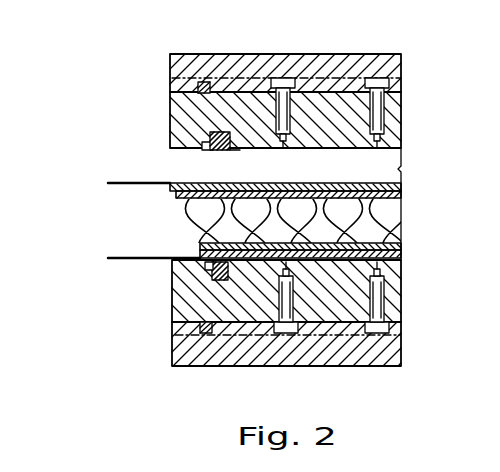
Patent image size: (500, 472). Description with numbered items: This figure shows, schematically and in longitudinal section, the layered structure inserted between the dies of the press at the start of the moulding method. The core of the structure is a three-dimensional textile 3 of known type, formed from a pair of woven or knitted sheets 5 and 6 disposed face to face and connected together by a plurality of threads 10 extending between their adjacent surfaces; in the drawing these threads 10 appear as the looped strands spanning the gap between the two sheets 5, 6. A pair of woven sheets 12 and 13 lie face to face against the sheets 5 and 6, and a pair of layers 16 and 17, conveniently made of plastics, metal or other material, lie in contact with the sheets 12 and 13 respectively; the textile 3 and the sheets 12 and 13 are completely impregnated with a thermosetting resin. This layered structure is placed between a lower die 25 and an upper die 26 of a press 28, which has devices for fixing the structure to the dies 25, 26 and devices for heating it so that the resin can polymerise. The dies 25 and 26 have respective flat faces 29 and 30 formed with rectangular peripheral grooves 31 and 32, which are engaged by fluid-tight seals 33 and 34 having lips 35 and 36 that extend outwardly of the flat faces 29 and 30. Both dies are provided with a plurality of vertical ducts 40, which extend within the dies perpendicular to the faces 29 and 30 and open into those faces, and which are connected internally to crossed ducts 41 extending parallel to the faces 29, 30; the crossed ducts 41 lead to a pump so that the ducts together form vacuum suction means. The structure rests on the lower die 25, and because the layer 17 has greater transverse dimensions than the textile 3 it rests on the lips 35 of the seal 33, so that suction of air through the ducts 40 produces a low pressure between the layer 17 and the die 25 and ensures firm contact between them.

The three-dimensional textile 3 is at (143, 228).
The woven or knitted sheet 5 is at (403, 192).
The woven or knitted sheet 6 is at (403, 257).
The threads 10 is at (200, 224).
The woven sheet 12 is at (170, 188).
The woven sheet 13 is at (300, 324).
The layer 16 is at (123, 178).
The layer 17 is at (124, 266).
The lower die 25 is at (172, 318).
The upper die 26 is at (170, 108).
The press 28 is at (98, 72).
The flat face 29 is at (368, 233).
The flat face 30 is at (370, 159).
The peripheral groove 31 is at (240, 266).
The peripheral groove 32 is at (230, 157).
The fluid-tight seal 33 is at (200, 328).
The fluid-tight seal 34 is at (210, 137).
The lip 35 is at (190, 263).
The lip 36 is at (205, 150).
The vertical ducts 40 is at (321, 78).
The crossed ducts 41 is at (364, 71).